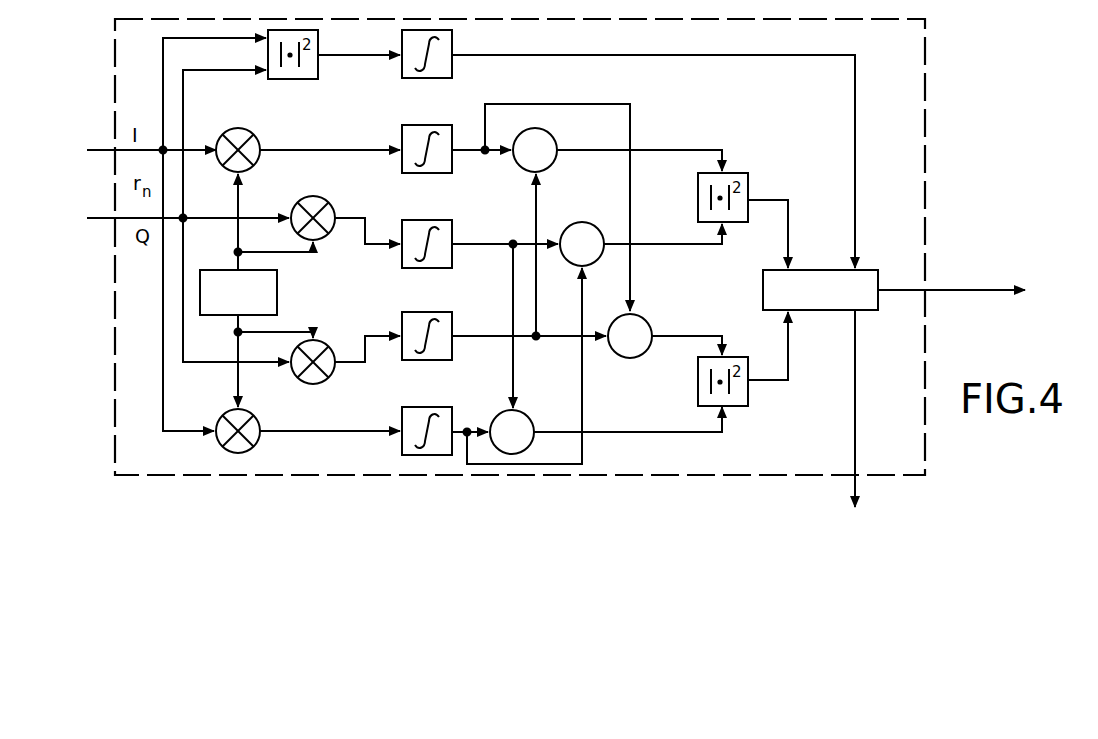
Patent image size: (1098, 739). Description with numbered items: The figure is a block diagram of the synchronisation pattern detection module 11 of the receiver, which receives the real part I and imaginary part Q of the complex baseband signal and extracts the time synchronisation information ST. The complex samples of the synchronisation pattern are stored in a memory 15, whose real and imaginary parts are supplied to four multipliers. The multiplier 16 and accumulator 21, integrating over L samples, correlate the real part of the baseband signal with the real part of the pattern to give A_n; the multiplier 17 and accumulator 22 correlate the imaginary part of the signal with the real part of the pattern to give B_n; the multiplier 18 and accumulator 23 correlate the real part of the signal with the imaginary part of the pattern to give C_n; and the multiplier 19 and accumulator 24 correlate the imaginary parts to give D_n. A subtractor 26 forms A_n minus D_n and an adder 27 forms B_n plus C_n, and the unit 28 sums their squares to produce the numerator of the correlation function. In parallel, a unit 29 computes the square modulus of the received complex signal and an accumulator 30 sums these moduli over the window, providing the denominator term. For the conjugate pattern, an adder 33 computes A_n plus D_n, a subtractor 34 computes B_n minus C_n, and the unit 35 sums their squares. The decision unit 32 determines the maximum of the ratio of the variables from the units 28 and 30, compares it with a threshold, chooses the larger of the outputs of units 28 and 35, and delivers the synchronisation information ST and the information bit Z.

The synchronisation pattern detection module 11 is at (925, 135).
The memory 15 is at (277, 285).
The multiplier 16 is at (256, 138).
The multiplier 17 is at (326, 202).
The multiplier 18 is at (220, 420).
The multiplier 19 is at (298, 381).
The accumulator 21 is at (428, 175).
The accumulator 22 is at (428, 268).
The accumulator 23 is at (400, 438).
The accumulator 24 is at (403, 360).
The subtractor 26 is at (553, 137).
The adder 27 is at (572, 224).
The square-summing unit 28 is at (735, 171).
The square modulus unit 29 is at (313, 80).
The accumulator 30 is at (453, 70).
The decision unit 32 is at (872, 268).
The adder 33 is at (616, 352).
The subtractor 34 is at (530, 418).
The square-summing unit 35 is at (698, 378).